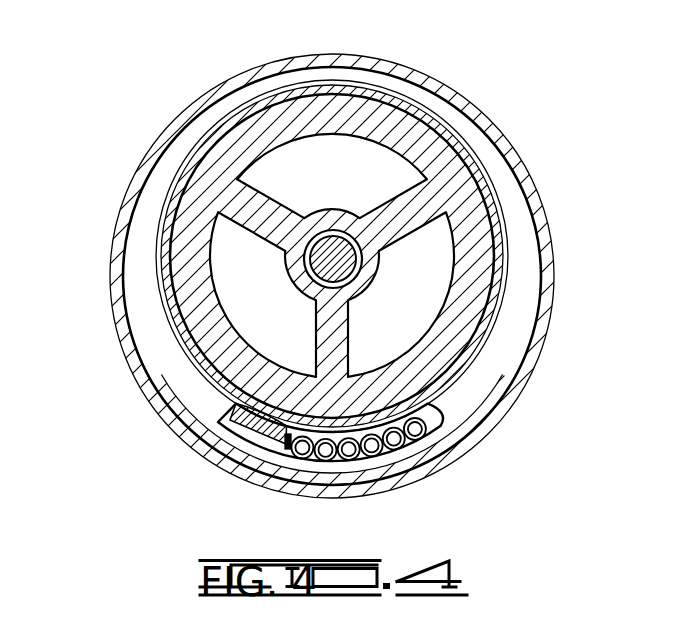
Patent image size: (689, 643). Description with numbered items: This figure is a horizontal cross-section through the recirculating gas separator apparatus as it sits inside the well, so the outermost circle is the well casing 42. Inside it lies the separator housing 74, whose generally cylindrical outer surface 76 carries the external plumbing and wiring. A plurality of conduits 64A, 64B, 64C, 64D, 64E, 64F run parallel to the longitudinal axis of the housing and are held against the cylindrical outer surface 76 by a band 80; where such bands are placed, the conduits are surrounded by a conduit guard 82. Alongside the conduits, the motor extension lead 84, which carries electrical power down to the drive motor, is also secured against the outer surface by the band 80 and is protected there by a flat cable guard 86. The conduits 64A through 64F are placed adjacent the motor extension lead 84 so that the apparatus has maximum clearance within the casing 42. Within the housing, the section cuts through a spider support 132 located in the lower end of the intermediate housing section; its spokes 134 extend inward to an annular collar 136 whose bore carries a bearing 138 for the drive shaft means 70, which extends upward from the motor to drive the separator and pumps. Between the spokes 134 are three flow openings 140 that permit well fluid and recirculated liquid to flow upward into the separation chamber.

The casing 42 is at (393, 60).
The separator housing 74 is at (400, 108).
The cylindrical outer surface 76 is at (445, 417).
The band 80 is at (440, 392).
The conduit guard 82 is at (443, 437).
The motor extension lead 84 is at (270, 450).
The flat cable guard 86 is at (232, 420).
The drive shaft means 70 is at (300, 285).
The spider support 132 is at (271, 266).
The spokes 134 is at (273, 220).
The annular collar 136 is at (337, 228).
The bearing 138 is at (312, 266).
The flow openings 140 is at (332, 255).
The conduit 64A is at (425, 442).
The conduit 64B is at (400, 450).
The conduit 64C is at (382, 458).
The conduit 64D is at (348, 460).
The conduit 64E is at (322, 459).
The conduit 64F is at (300, 457).